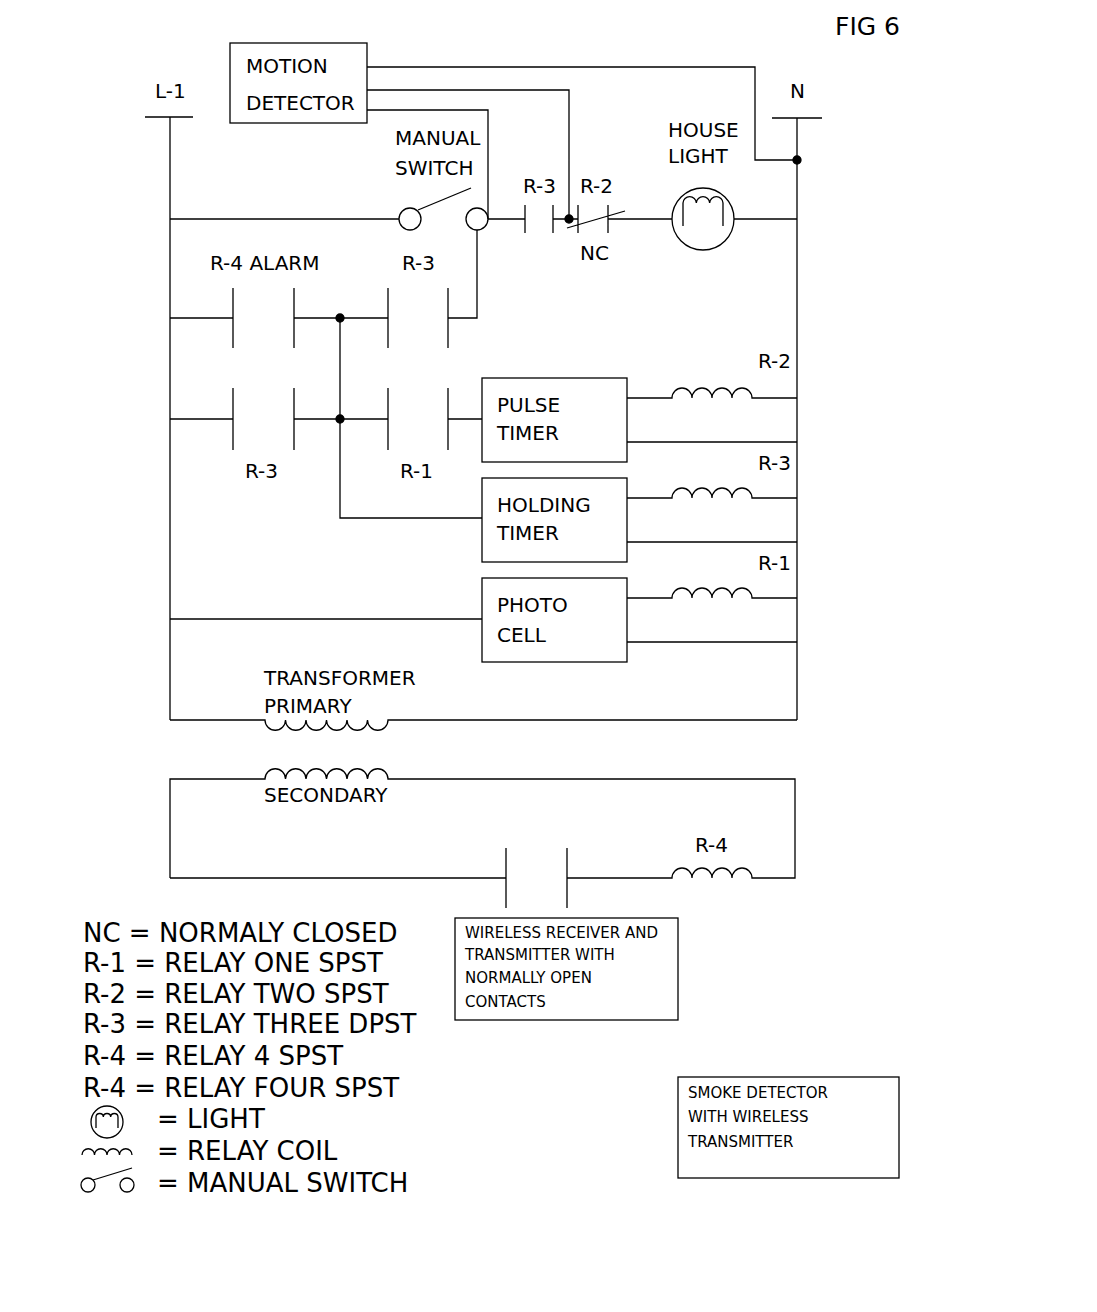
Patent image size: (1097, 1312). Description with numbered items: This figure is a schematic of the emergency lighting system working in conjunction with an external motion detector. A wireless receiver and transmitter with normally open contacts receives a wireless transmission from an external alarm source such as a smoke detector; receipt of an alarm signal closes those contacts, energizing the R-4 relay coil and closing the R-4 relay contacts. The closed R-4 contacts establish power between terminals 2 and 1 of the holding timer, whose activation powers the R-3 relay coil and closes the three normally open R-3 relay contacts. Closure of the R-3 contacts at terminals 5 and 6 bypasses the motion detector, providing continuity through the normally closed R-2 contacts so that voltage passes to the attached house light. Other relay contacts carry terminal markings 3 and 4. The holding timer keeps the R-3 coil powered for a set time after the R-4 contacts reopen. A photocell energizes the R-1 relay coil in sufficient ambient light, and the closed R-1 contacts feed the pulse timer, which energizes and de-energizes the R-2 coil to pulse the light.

The holding timer terminal 1 is at (433, 480).
The holding timer terminal 2 is at (381, 502).
The relay contact terminal 3 is at (511, 462).
The relay contact terminal 4 is at (458, 318).
The R-3 relay contact terminal 5 is at (518, 216).
The R-3 relay contact terminal 6 is at (558, 216).